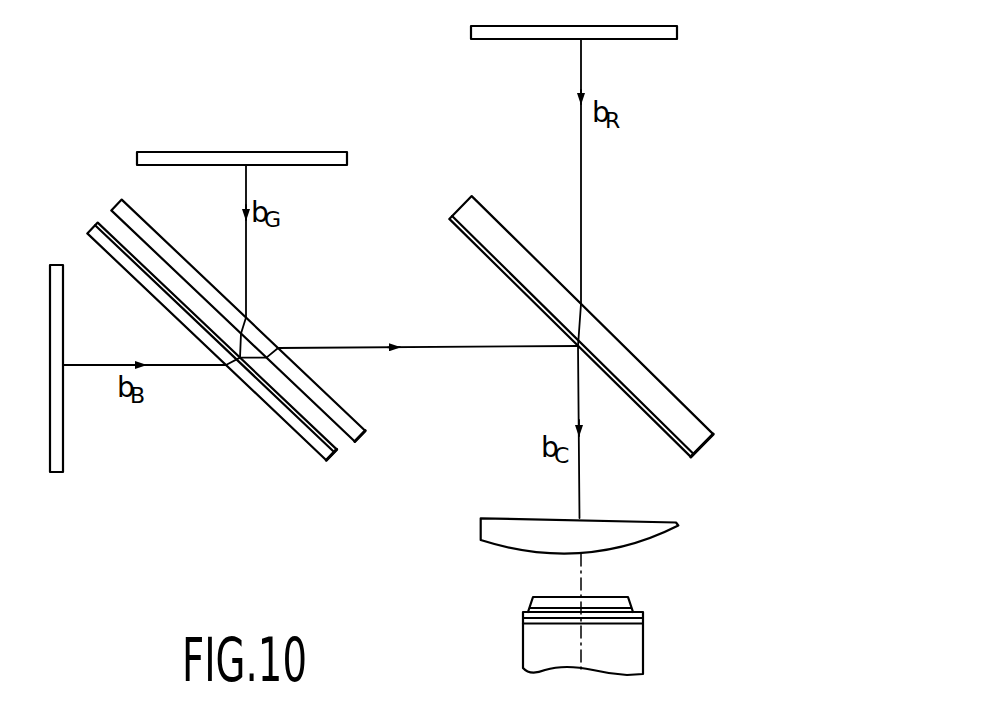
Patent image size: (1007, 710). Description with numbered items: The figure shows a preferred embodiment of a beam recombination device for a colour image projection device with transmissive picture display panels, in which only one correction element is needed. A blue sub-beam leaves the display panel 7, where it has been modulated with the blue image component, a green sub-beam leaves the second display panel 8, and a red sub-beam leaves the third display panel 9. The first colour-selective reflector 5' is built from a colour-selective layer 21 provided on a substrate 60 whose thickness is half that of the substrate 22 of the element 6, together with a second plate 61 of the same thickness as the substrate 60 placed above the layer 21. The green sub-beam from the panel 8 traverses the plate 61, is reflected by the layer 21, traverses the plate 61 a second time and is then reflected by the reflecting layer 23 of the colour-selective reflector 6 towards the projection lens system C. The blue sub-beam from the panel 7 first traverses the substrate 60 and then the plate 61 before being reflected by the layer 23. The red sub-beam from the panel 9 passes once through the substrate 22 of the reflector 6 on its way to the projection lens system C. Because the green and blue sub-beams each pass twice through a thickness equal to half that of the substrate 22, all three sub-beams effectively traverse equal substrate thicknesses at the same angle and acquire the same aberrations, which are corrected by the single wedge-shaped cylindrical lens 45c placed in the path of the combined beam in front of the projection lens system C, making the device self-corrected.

The colour-selective reflector 5' is at (242, 342).
The colour-selective reflector 6 is at (444, 204).
The display panel 7 is at (57, 473).
The second display panel 8 is at (347, 158).
The third display panel 9 is at (677, 31).
The reflecting layer 21 is at (340, 453).
The substrate 22 is at (707, 433).
The reflecting layer 23 is at (688, 457).
The wedge-shaped cylindrical lens 45c is at (679, 527).
The substrate 60 is at (322, 456).
The plate 61 is at (362, 431).
The projection lens system C is at (658, 636).